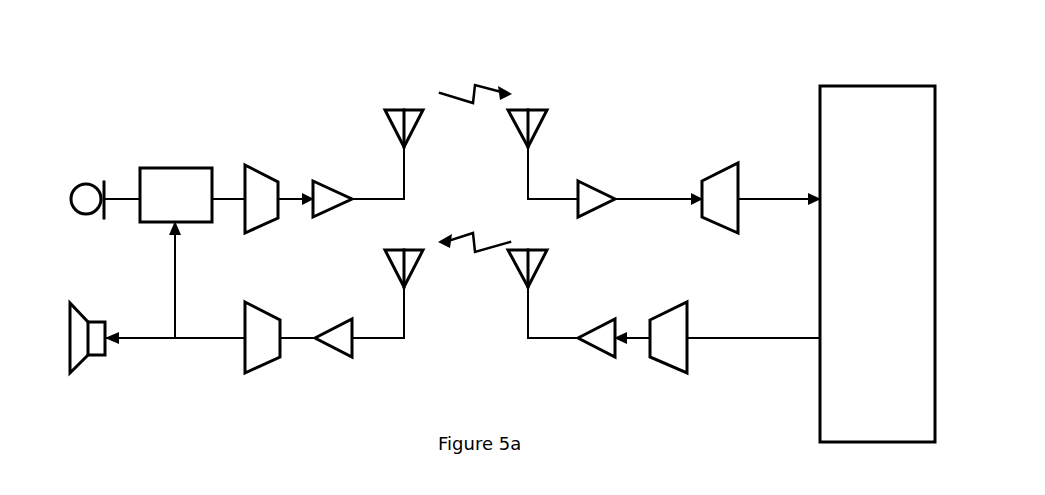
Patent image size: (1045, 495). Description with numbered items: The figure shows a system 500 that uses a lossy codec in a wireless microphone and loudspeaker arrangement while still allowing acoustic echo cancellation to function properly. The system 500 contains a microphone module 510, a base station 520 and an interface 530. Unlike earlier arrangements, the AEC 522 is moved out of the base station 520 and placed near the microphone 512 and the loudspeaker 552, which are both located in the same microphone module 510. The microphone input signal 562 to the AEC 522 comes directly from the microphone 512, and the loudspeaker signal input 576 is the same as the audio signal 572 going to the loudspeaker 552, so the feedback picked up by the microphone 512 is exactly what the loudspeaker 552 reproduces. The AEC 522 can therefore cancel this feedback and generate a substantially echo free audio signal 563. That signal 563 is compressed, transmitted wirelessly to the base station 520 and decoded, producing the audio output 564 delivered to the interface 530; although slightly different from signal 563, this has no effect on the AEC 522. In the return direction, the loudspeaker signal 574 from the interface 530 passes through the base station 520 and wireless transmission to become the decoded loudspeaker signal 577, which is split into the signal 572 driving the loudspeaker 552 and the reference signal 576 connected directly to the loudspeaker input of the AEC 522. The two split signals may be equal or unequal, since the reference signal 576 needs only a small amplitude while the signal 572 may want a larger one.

The system 500 is at (283, 76).
The microphone module 510 is at (178, 105).
The base station 520 is at (687, 58).
The microphone 512 is at (68, 190).
The AEC 522 is at (138, 167).
The interface 530 is at (847, 87).
The loudspeaker 552 is at (68, 375).
The microphone input signal 562 is at (123, 193).
The echo free audio signal 563 is at (222, 197).
The audio output signal 564 is at (810, 198).
The audio signal to loudspeaker 572 is at (160, 333).
The loudspeaker signal 574 is at (802, 337).
The loudspeaker signal input 576 is at (176, 257).
The decoded loudspeaker signal 577 is at (200, 341).